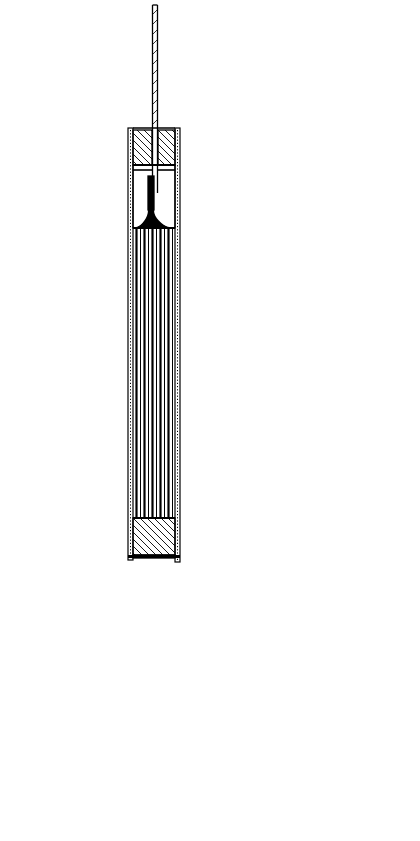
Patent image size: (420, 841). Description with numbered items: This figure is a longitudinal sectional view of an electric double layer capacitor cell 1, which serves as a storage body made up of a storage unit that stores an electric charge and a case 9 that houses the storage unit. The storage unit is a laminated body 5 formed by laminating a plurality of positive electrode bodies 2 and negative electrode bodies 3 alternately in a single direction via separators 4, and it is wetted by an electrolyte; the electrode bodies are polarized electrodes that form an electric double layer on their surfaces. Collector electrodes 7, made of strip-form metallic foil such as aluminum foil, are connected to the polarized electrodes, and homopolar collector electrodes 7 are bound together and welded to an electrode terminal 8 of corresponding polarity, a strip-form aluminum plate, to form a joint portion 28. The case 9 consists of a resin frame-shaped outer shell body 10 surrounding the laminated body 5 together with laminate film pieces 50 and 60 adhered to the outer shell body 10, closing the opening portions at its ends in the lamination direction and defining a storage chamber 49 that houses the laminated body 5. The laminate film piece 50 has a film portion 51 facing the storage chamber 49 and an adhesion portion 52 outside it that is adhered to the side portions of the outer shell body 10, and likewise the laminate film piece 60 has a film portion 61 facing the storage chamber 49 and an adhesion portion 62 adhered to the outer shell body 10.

The electric double layer capacitor cell 1 is at (177, 112).
The case 9 is at (186, 568).
The electrode terminal 8 is at (152, 65).
The laminate film piece 50 is at (51, 137).
The adhesion portion 52 is at (130, 150).
The film portion 51 is at (130, 190).
The joint portion 28 is at (157, 188).
The collector electrode 7 is at (158, 220).
The storage chamber 49 is at (165, 224).
The laminated body 5 is at (76, 422).
The positive electrode body 2 is at (133, 433).
The negative electrode body 3 is at (147, 456).
The separator 4 is at (133, 489).
The laminate film piece 60 is at (250, 465).
The film portion 61 is at (178, 493).
The adhesion portion 62 is at (178, 531).
The outer shell body 10 is at (152, 548).